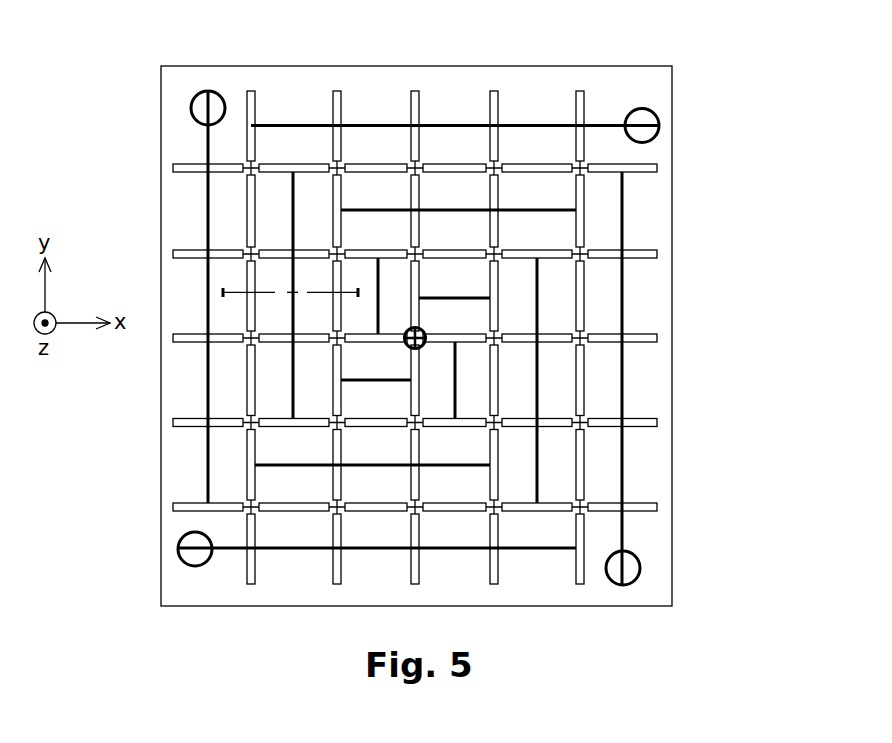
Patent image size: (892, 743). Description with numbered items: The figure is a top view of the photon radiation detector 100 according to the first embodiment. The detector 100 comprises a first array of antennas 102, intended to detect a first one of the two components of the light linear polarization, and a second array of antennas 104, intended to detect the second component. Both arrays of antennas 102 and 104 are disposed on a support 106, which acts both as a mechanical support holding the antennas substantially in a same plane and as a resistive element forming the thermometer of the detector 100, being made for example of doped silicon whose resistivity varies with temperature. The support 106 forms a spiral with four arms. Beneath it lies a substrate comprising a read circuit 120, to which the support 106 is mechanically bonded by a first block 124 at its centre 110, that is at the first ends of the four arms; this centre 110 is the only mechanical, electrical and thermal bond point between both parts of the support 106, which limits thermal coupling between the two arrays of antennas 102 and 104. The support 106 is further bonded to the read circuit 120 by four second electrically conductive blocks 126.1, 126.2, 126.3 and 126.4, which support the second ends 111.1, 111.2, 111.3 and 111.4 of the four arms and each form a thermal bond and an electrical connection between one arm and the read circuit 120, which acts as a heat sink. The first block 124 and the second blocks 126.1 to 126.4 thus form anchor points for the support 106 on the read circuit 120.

The detector 100 is at (697, 287).
The first array of antennas 102 is at (457, 162).
The second array of antennas 104 is at (341, 104).
The support 106 is at (675, 84).
The centre 110 is at (426, 332).
The second end 111.1 is at (207, 91).
The second end 111.2 is at (623, 585).
The second end 111.3 is at (673, 144).
The second end 111.4 is at (182, 562).
The read circuit 120 is at (673, 393).
The first block 124 is at (404, 336).
The second block 126.1 is at (198, 108).
The second block 126.2 is at (638, 571).
The second block 126.3 is at (643, 118).
The second block 126.4 is at (188, 538).